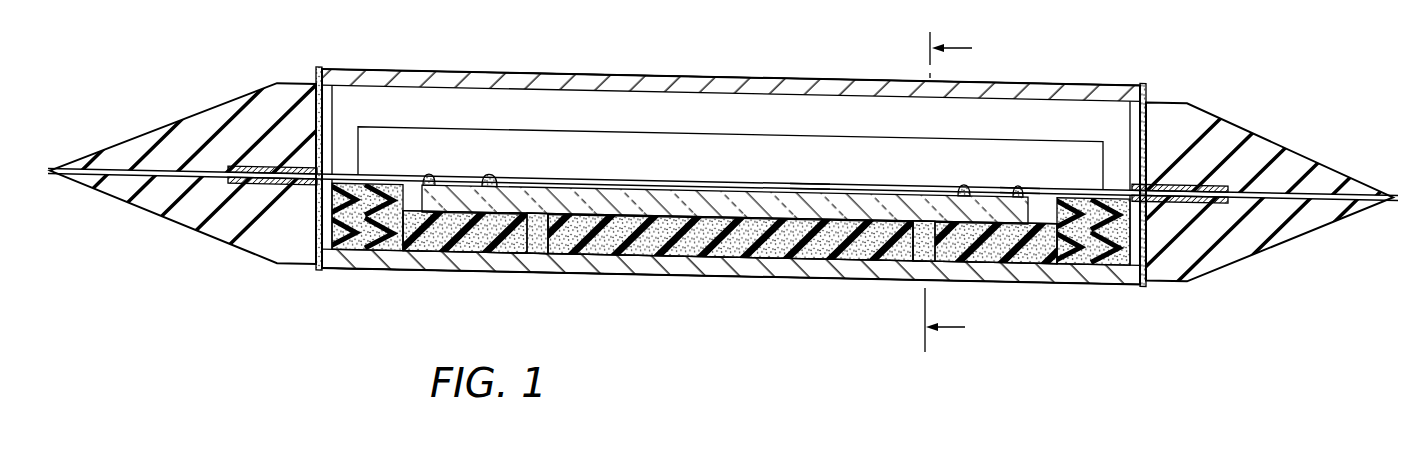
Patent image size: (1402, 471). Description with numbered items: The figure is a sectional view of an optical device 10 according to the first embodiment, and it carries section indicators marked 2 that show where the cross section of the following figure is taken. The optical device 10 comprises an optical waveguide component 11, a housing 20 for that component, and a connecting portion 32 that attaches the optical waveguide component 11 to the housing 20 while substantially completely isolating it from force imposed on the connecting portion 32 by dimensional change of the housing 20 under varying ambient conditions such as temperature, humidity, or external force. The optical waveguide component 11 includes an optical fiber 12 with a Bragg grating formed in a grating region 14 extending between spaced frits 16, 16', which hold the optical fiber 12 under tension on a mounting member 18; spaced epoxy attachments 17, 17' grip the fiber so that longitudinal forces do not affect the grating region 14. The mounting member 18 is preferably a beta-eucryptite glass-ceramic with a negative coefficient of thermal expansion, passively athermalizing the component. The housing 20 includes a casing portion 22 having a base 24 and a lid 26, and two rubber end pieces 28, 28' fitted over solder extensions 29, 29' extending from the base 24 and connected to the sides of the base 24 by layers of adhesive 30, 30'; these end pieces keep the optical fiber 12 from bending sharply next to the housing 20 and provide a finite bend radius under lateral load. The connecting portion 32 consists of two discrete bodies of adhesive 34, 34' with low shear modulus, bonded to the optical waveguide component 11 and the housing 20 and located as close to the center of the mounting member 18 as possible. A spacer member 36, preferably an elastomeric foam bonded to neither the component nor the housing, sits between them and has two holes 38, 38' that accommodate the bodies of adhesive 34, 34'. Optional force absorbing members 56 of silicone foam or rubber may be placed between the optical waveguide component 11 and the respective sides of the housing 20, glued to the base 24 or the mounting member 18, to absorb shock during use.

The optical device 10 is at (1069, 62).
The optical waveguide component 11 is at (803, 168).
The optical fiber 12 is at (1017, 192).
The grating region 14 is at (731, 186).
The frit 16 is at (504, 163).
The frit 16' is at (966, 174).
The epoxy attachment 17 is at (430, 162).
The epoxy attachment 17' is at (1013, 153).
The mounting member 18 is at (633, 205).
The housing 20 is at (290, 302).
The casing portion 22 is at (368, 278).
The base 24 is at (462, 273).
The lid 26 is at (381, 71).
The rubber end piece 28 is at (215, 174).
The rubber end piece 28' is at (1219, 195).
The solder extension 29 is at (299, 142).
The solder extension 29' is at (1155, 155).
The adhesive layer 30 is at (301, 155).
The adhesive layer 30' is at (1167, 171).
The connecting portion 32 is at (564, 319).
The body of adhesive 34 is at (575, 266).
The body of adhesive 34' is at (903, 269).
The spacer member 36 is at (746, 248).
The hole 38 is at (535, 266).
The hole 38' is at (955, 269).
The force absorbing member 56 is at (448, 136).
The section line 2 is at (958, 194).